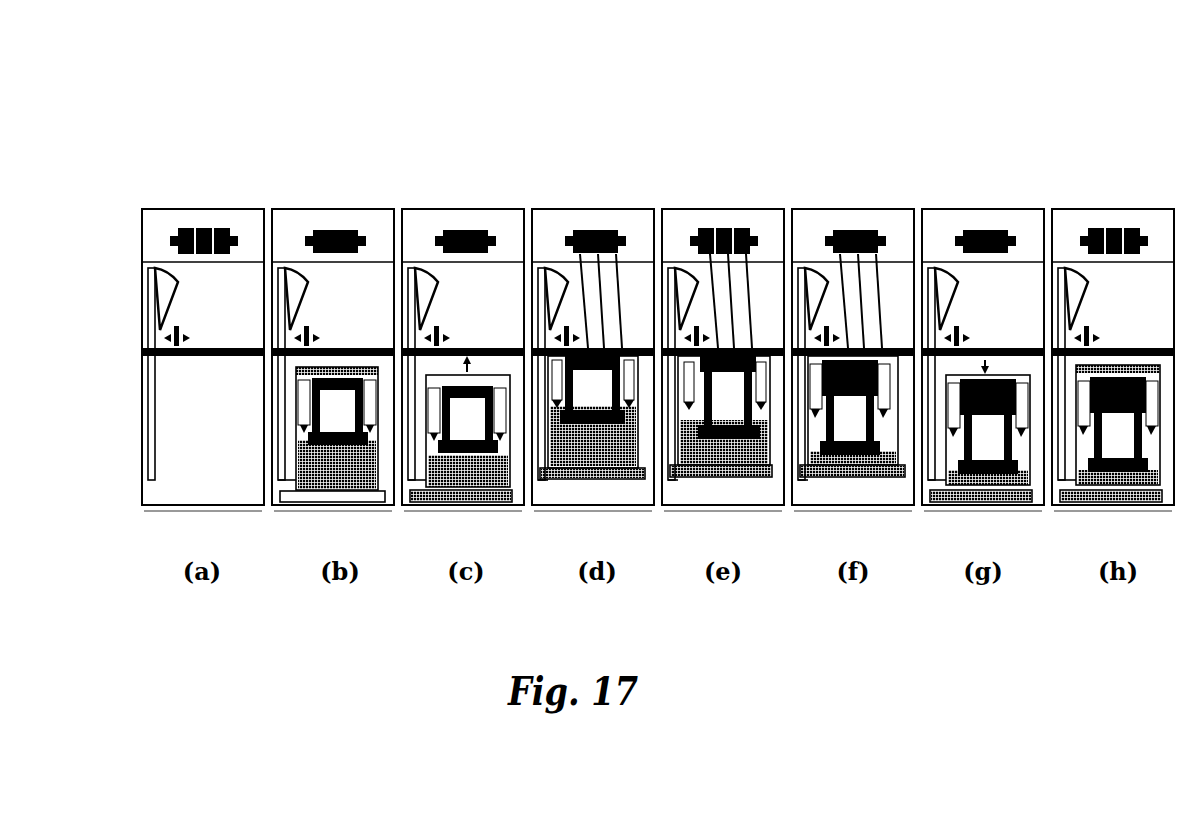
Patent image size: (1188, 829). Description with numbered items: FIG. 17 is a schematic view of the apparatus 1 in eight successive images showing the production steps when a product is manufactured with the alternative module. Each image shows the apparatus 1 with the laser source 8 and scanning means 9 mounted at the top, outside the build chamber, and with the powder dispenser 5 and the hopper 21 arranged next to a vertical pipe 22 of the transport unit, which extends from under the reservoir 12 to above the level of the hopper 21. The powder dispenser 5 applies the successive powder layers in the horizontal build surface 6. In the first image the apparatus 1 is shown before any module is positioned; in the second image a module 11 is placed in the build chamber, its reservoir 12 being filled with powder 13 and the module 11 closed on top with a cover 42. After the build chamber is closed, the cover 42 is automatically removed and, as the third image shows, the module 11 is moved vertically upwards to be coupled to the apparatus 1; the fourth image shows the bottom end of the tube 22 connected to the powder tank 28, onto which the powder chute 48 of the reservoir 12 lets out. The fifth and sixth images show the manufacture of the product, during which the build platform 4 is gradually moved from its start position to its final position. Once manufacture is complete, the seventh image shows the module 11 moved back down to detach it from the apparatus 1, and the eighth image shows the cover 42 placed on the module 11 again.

The apparatus 1 is at (202, 200).
The build platform 4 is at (481, 376).
The powder dispenser 5 is at (168, 338).
The build surface 6 is at (232, 358).
The laser source 8 is at (222, 222).
The scanning means 9 is at (185, 222).
The module 11 is at (355, 516).
The reservoir 12 is at (333, 480).
The powder 13 is at (727, 453).
The hopper 21 is at (168, 298).
The vertical pipe 22 is at (150, 388).
The powder tank 28 is at (548, 478).
The cover 42 is at (349, 370).
The powder chute 48 is at (441, 505).